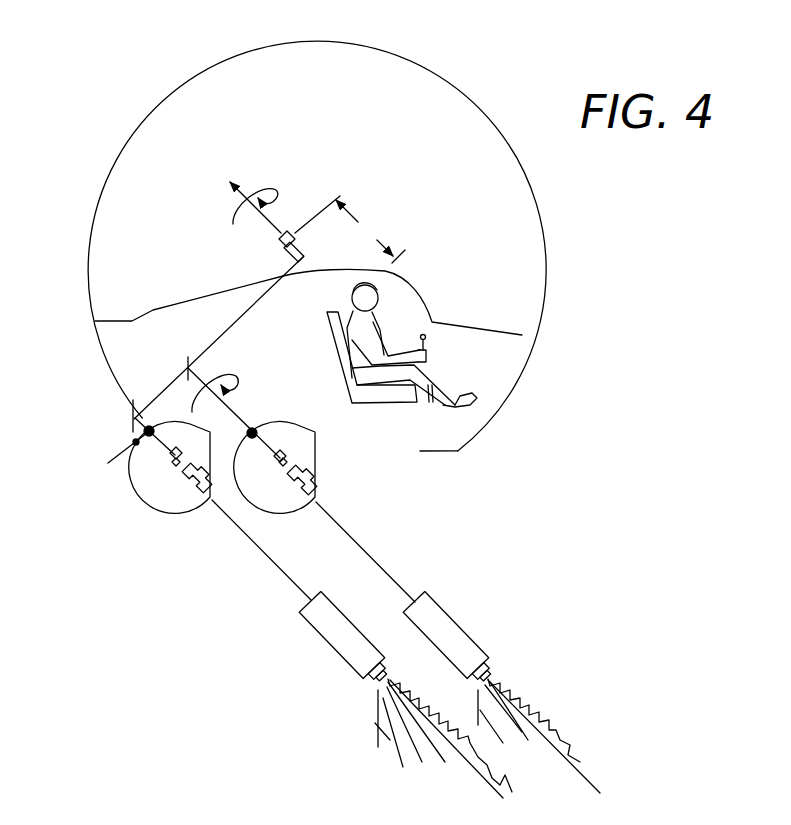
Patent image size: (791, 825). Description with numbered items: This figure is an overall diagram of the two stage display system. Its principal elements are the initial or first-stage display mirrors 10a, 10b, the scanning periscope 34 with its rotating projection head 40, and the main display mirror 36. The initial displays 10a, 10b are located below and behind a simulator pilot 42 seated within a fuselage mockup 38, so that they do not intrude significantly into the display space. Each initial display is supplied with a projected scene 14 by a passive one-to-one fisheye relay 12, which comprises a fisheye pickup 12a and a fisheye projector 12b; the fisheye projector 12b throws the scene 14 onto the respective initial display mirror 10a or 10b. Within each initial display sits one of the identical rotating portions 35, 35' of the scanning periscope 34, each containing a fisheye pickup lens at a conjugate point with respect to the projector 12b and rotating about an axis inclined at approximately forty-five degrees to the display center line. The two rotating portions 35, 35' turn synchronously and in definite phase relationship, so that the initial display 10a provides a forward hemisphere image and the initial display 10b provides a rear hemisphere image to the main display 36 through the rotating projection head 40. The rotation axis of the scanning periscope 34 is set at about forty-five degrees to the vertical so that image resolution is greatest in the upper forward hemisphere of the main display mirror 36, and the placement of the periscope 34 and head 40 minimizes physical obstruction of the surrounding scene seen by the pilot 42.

The main display mirror 36 is at (366, 41).
The fuselage mockup 38 is at (153, 310).
The simulator pilot 42 is at (378, 330).
The rotating projection head 40 is at (294, 230).
The scanning periscope 34 is at (170, 368).
The rotating portion of the scanning periscope 35 is at (247, 413).
The rotating portion of the scanning periscope 35' is at (120, 456).
The first-stage display mirror 10a is at (152, 505).
The first-stage display mirror 10b is at (272, 513).
The fisheye projector 12b is at (183, 492).
The passive 1:1 fisheye relay 12 is at (358, 622).
The fisheye pickup 12a is at (377, 682).
The scene 14 is at (547, 767).